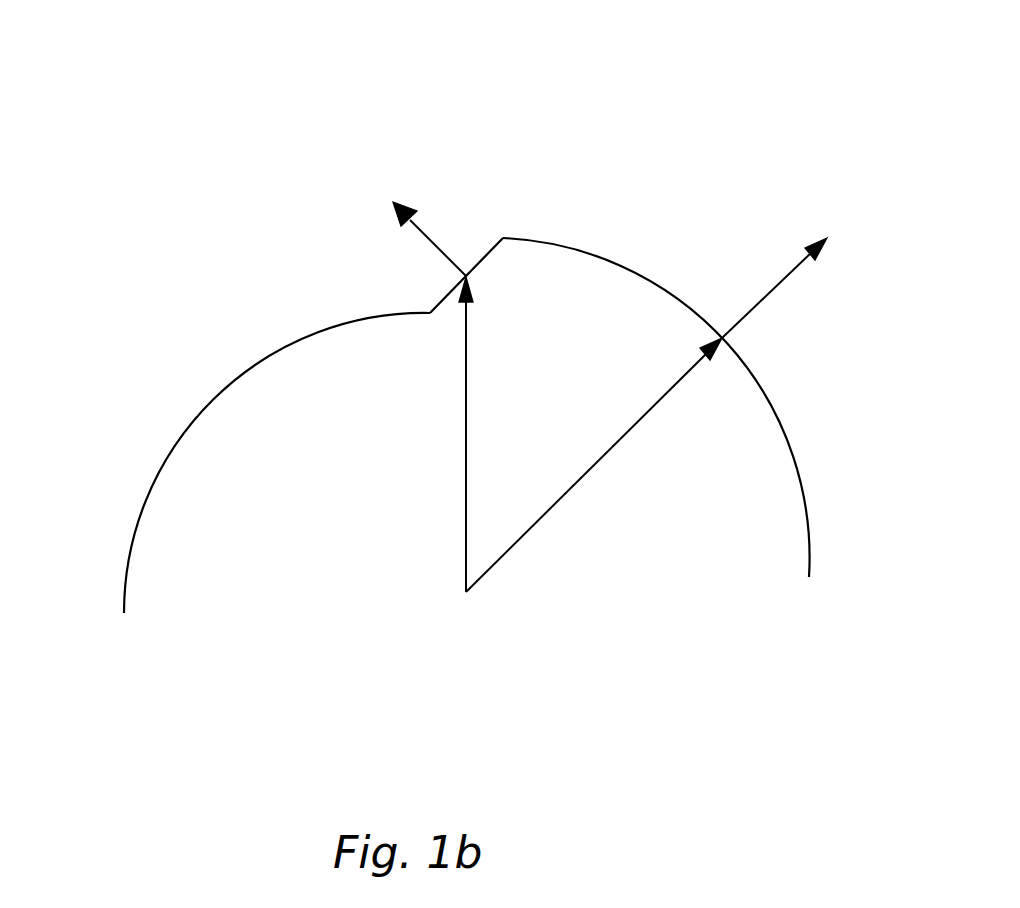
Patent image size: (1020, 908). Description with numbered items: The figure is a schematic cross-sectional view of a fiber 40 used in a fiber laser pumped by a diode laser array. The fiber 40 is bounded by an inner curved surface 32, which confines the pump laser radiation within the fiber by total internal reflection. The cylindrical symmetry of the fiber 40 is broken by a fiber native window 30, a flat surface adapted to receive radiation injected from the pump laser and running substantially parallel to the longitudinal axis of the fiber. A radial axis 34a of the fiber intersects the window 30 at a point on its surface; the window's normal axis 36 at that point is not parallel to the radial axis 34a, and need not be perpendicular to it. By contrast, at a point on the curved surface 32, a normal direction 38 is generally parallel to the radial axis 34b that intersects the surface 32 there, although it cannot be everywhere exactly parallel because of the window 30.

The fiber native window 30 is at (490, 243).
The inner curved surface 32 is at (773, 410).
The radial axis 34a is at (465, 418).
The radial axis 34b is at (613, 452).
The normal axis 36 is at (430, 235).
The normal direction 38 is at (770, 300).
The fiber 40 is at (238, 443).